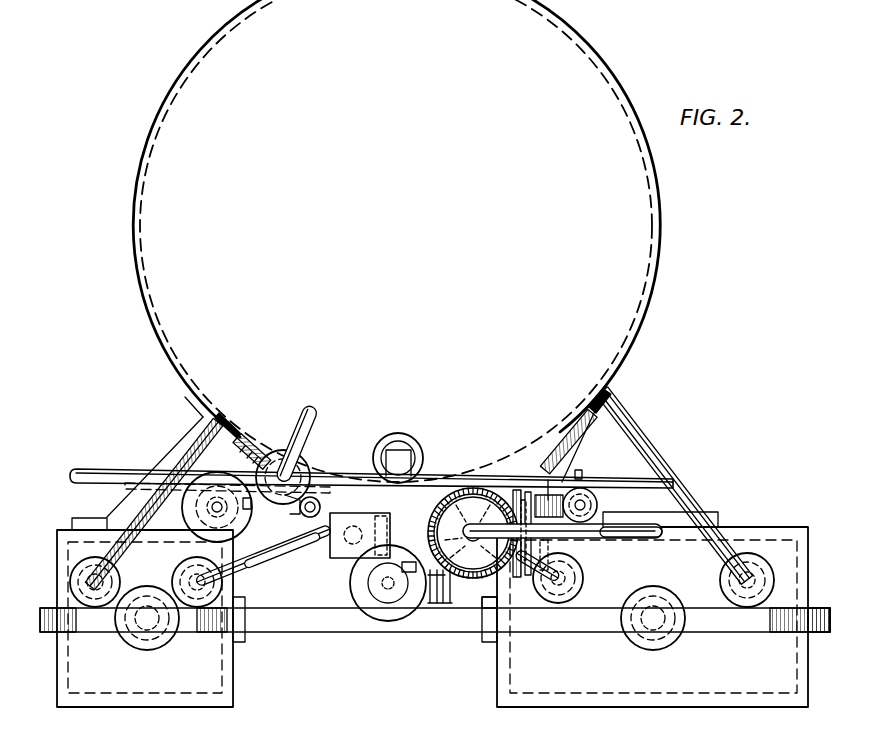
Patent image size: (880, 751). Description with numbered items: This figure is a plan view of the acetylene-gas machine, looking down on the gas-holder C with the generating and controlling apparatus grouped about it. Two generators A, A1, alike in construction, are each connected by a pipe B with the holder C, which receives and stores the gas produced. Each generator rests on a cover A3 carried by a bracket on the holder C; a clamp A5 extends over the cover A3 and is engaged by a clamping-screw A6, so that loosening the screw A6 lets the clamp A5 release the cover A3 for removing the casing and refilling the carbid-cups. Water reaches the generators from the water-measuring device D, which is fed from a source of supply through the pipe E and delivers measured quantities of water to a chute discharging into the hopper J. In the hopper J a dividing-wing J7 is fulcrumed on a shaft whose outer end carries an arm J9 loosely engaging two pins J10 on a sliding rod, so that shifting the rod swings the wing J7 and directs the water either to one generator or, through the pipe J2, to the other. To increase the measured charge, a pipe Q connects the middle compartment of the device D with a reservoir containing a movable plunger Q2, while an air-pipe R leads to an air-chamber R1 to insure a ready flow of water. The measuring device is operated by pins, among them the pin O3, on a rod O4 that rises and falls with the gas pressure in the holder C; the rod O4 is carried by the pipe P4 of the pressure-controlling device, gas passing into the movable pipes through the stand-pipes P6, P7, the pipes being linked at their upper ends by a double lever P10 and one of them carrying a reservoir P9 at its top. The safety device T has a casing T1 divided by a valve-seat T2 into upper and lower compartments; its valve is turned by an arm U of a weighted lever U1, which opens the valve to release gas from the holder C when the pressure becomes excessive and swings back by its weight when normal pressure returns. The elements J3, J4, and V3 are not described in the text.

The gas-holder C is at (396, 241).
The generator A is at (371, 586).
The generator A1 is at (479, 633).
The cover A3 is at (116, 700).
The clamp A5 is at (105, 623).
The clamping-screw A6 is at (151, 642).
The pipe B is at (199, 448).
The hopper J is at (332, 558).
The pipe J2 is at (292, 562).
The roller J3 is at (192, 572).
The link bar J4 is at (180, 580).
The dividing-wing J7 is at (534, 576).
The arm J9 is at (462, 592).
The pins J10 is at (437, 604).
The pipe Q is at (410, 572).
The movable plunger Q2 is at (402, 612).
The air-pipe R is at (433, 498).
The air-chamber R1 is at (492, 498).
The water-measuring device D is at (562, 564).
The pipe E is at (628, 540).
The stand-pipe P6 is at (557, 497).
The pipe P4 is at (660, 516).
The stand-pipe P7 is at (247, 445).
The reservoir P9 is at (222, 513).
The double lever P10 is at (348, 478).
The pin O3 is at (527, 480).
The rod O4 is at (548, 480).
The guide V3 is at (572, 555).
The safety device T is at (283, 464).
The casing T1 is at (285, 452).
The valve-seat T2 is at (312, 426).
The arm U is at (310, 518).
The weighted lever U1 is at (293, 516).